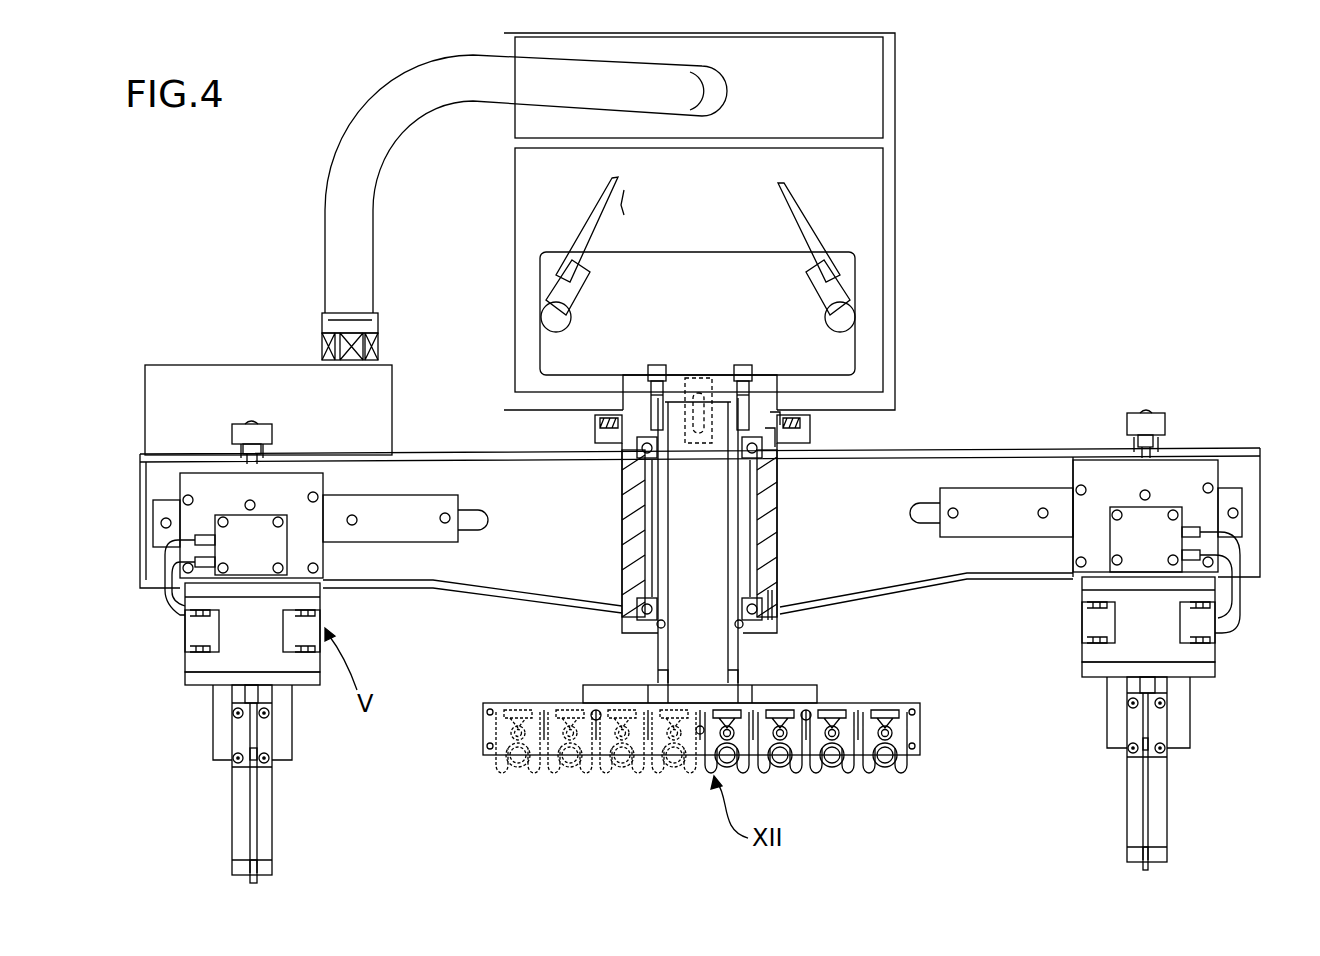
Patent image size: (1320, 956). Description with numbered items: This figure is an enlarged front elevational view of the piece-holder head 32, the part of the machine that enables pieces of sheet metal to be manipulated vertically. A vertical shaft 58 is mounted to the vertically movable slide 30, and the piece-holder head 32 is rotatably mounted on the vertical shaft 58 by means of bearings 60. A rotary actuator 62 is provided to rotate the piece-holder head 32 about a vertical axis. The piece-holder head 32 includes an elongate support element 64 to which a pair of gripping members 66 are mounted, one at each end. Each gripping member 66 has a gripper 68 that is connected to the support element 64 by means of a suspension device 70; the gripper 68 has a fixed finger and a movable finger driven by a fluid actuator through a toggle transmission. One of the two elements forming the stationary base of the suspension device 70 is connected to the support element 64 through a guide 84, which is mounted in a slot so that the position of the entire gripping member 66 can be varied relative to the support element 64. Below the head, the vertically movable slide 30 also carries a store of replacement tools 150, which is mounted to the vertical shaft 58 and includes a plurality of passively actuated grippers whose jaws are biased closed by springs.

The vertically movable slide 30 is at (899, 250).
The piece-holder head 32 is at (1002, 444).
The vertical shaft 58 is at (705, 632).
The bearings 60 is at (775, 445).
The rotary actuator 62 is at (740, 270).
The elongate support element 64 is at (552, 578).
The gripping members 66 is at (180, 673).
The gripper 68 is at (213, 722).
The suspension device 70 is at (342, 487).
The guide 84 is at (415, 530).
The store of replacement tools 150 is at (655, 788).